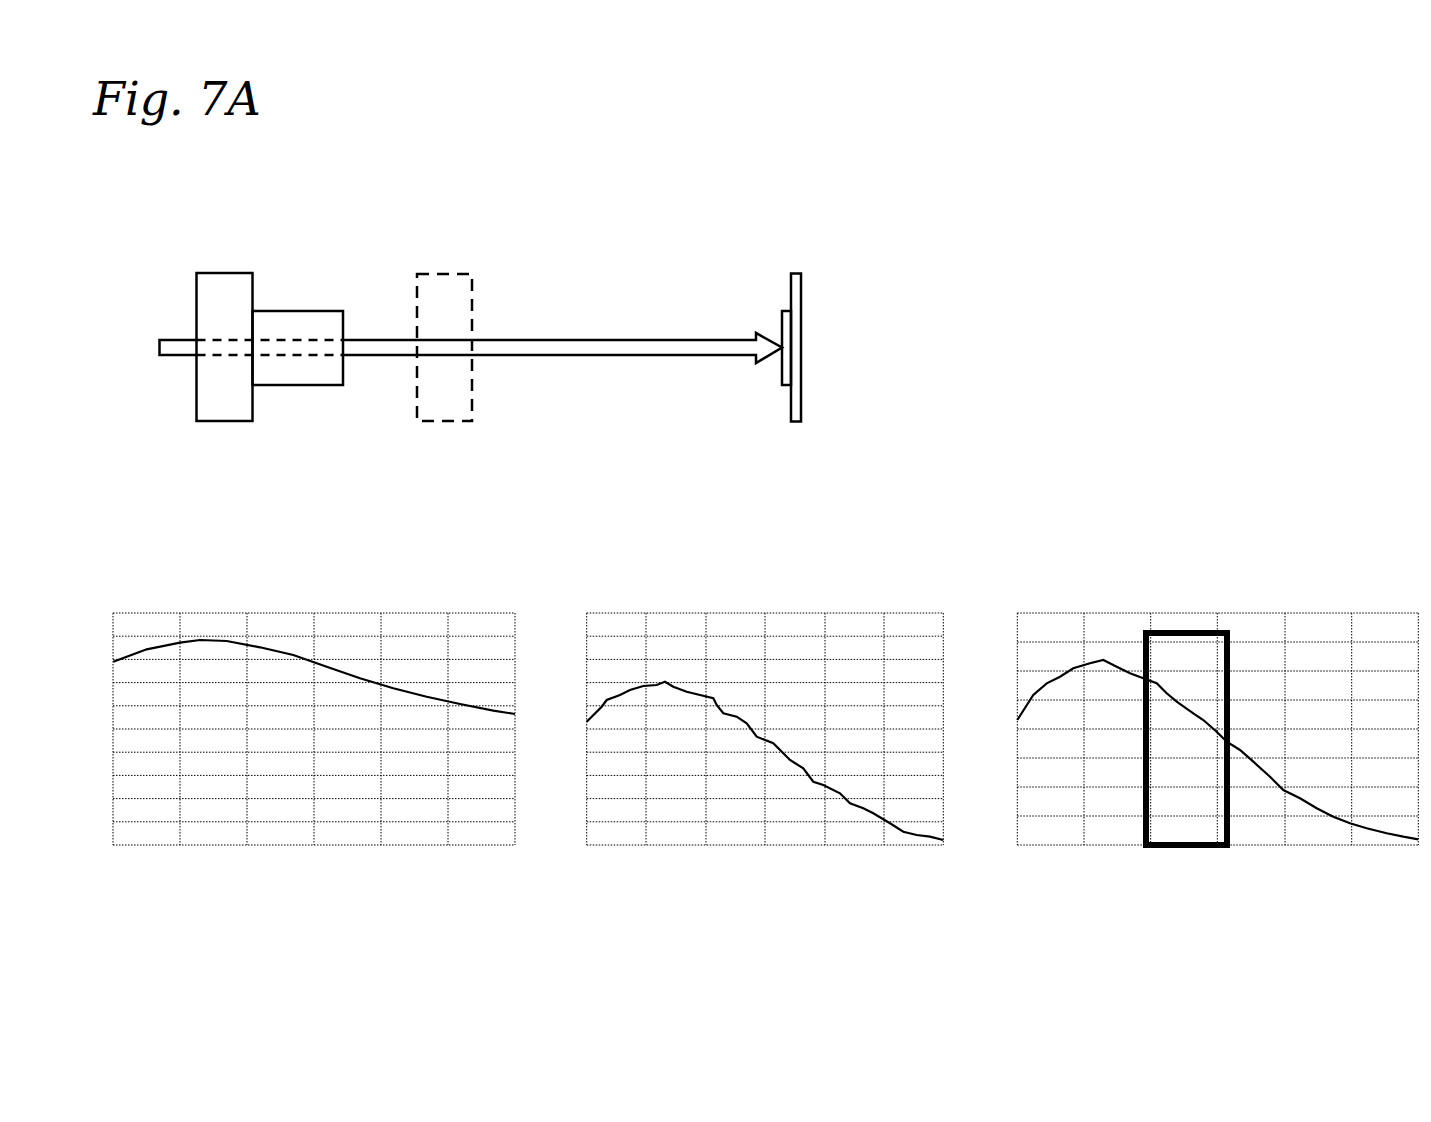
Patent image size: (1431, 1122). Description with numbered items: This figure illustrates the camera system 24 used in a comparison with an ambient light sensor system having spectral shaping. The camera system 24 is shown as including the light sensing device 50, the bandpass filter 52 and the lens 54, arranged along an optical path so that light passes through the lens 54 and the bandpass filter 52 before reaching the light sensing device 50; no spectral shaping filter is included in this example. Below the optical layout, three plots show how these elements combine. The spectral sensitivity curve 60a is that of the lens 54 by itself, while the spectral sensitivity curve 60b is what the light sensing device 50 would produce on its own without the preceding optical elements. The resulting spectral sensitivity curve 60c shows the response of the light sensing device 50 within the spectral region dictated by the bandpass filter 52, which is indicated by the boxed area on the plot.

The camera system 24 is at (692, 188).
The lens 54 is at (223, 273).
The bandpass filter 52 is at (443, 273).
The light sensing device 50 is at (798, 273).
The spectral sensitivity curve 60a is at (211, 640).
The spectral sensitivity curve 60b is at (665, 682).
The spectral sensitivity curve 60c is at (1103, 660).